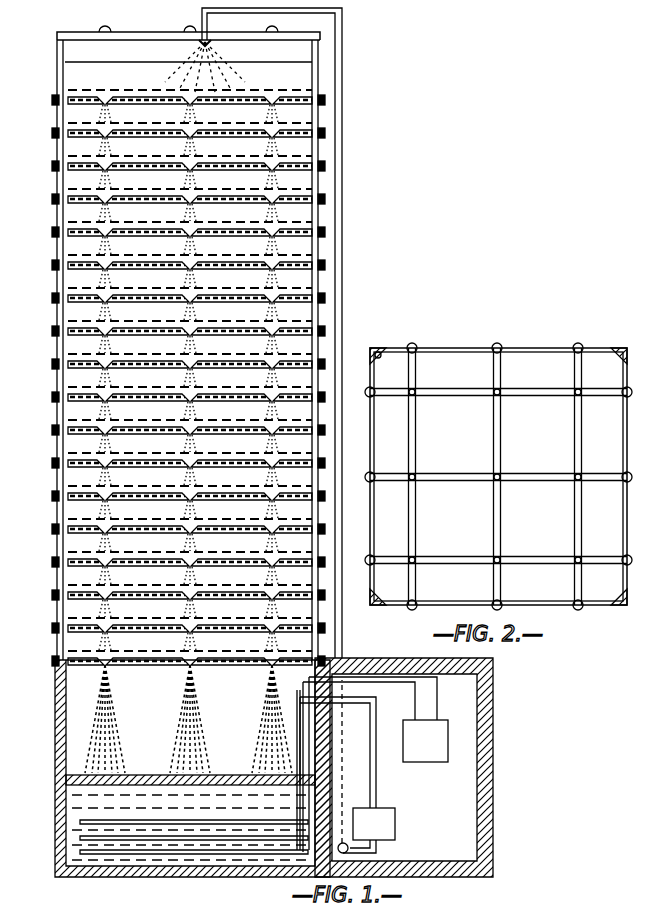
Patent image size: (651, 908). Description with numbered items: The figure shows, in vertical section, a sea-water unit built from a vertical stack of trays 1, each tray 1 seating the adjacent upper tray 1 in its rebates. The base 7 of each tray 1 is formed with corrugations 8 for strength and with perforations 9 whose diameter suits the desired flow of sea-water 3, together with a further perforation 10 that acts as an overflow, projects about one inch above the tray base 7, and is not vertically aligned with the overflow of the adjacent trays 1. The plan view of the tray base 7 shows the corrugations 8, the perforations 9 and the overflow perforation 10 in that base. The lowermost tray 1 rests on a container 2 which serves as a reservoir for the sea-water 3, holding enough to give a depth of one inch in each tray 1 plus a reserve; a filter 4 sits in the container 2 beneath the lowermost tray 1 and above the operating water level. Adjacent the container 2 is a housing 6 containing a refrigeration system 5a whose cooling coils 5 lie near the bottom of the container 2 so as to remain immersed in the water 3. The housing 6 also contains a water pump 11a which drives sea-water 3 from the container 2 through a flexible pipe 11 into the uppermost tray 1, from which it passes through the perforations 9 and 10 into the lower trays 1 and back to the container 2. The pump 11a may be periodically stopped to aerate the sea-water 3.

In FIG. 1, the tray 1 is at (67, 413).
In FIG. 1, the container 2 is at (57, 688).
In FIG. 1, the sea-water 3 is at (98, 733).
In FIG. 1, the filter 4 is at (68, 780).
In FIG. 1, the cooling coils 5 is at (87, 820).
In FIG. 1, the refrigeration system 5a is at (435, 745).
In FIG. 1, the housing 6 is at (497, 813).
In FIG. 1, the tray base 7 is at (282, 383).
In FIG. 2, the tray base 7 is at (396, 540).
In FIG. 1, the corrugations 8 is at (70, 256).
In FIG. 2, the corrugations 8 is at (432, 560).
In FIG. 1, the perforations 9 is at (258, 172).
In FIG. 2, the perforations 9 is at (418, 397).
In FIG. 1, the overflow perforation 10 is at (56, 150).
In FIG. 2, the overflow perforation 10 is at (379, 353).
In FIG. 1, the flexible pipe 11 is at (343, 160).
In FIG. 1, the water pump 11a is at (386, 826).